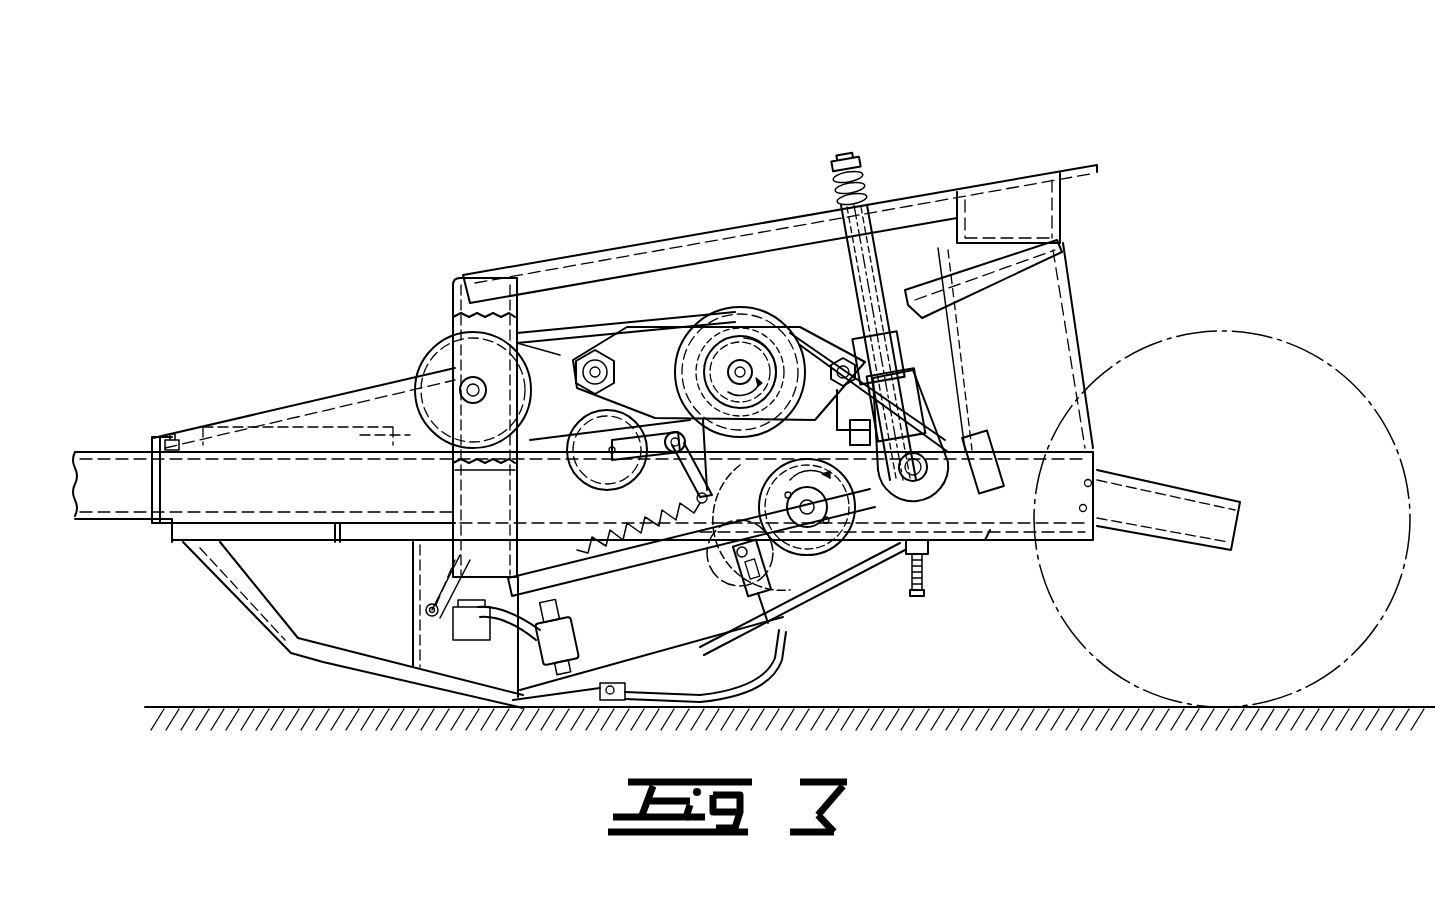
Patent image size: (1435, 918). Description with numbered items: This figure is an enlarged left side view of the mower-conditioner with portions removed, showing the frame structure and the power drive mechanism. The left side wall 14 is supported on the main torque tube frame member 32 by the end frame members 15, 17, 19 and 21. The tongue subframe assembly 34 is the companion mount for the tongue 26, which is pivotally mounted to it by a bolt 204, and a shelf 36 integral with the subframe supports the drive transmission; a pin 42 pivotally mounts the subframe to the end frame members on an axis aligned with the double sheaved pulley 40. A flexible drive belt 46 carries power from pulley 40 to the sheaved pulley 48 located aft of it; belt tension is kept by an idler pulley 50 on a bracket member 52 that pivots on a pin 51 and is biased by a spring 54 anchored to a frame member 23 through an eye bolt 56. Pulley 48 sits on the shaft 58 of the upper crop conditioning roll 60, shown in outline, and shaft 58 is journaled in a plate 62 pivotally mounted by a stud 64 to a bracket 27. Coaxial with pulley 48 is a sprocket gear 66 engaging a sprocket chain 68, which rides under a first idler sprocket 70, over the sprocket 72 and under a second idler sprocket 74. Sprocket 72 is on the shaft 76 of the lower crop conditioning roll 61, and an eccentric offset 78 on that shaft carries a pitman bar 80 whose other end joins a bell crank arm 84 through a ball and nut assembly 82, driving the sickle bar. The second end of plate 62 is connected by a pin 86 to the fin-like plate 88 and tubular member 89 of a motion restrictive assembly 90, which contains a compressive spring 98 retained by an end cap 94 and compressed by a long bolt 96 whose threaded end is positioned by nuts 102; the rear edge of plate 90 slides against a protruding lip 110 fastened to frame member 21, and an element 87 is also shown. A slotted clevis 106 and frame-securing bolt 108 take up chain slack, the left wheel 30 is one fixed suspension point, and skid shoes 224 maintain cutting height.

The left side wall 14 is at (598, 241).
The end frame member 15 is at (722, 226).
The end frame member 17 is at (453, 305).
The end frame member 19 is at (1066, 290).
The end frame member 21 is at (1100, 470).
The frame member 23 is at (424, 610).
The tongue 26 is at (140, 510).
The bracket 27 is at (570, 344).
The left wheel 30 is at (1310, 343).
The main torque tube frame member 32 is at (988, 542).
The tongue subframe assembly 34 is at (322, 398).
The shelf 36 is at (400, 432).
The double sheaved pulley 40 is at (432, 358).
The pin 42 is at (470, 402).
The flexible drive belt 46 is at (588, 334).
The sheaved pulley 48 is at (745, 322).
The idler pulley 50 is at (576, 462).
The pin 51 is at (672, 432).
The bracket member 52 is at (690, 486).
The spring 54 is at (626, 530).
The eye bolt 56 is at (522, 563).
The shaft 58 is at (726, 370).
The upper crop conditioning roll 60 is at (778, 330).
The lower crop conditioning roll 61 is at (840, 590).
The plate 62 is at (665, 330).
The stud 64 is at (582, 386).
The sprocket gear 66 is at (734, 336).
The sprocket chain 68 is at (928, 412).
The first idler sprocket 70 is at (935, 455).
The sprocket 72 is at (845, 512).
The second idler sprocket 74 is at (768, 562).
The shaft 76 is at (795, 490).
The eccentric offset 78 is at (845, 572).
The pitman bar 80 is at (668, 558).
The ball and nut assembly 82 is at (472, 642).
The bell crank arm 84 is at (572, 632).
The pin 86 is at (838, 356).
The arm 87 is at (840, 318).
The fin-like plate 88 is at (835, 428).
The tubular member 89 is at (898, 355).
The motion restrictive assembly 90 is at (922, 388).
The end cap 94 is at (926, 546).
The long bolt 96 is at (928, 592).
The compressive spring 98 is at (868, 186).
The nuts 102 is at (928, 566).
The slotted clevis 106 is at (735, 586).
The frame-securing bolt 108 is at (762, 608).
The protruding lip 110 is at (996, 446).
The bolt 204 is at (170, 438).
The skid shoes 224 is at (768, 690).